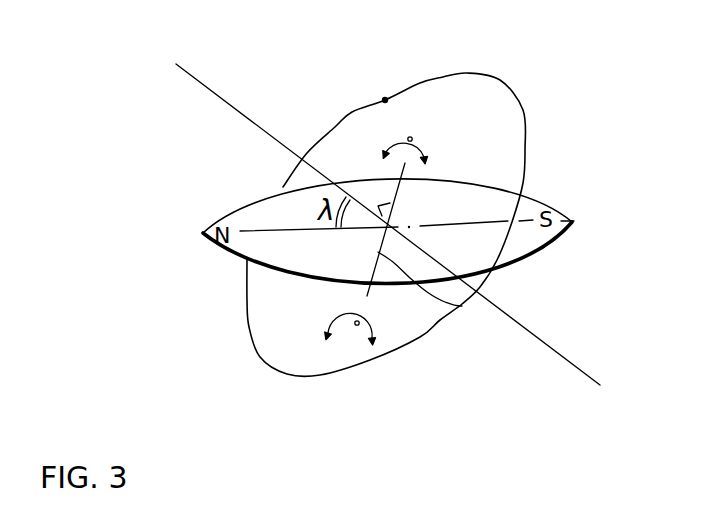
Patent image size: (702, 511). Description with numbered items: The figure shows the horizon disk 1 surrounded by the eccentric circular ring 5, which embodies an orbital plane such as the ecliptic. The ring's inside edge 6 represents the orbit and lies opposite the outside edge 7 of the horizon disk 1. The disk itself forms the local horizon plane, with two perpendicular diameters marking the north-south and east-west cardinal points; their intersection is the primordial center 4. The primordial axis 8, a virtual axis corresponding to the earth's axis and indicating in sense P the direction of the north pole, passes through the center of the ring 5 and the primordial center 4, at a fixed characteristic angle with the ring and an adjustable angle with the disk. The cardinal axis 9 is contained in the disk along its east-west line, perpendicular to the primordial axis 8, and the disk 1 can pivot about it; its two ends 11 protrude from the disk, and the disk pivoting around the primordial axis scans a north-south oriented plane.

The horizon disk 1 is at (537, 200).
The primordial center 4 is at (440, 177).
The eccentric circular ring 5 is at (425, 81).
The inside edge 6 is at (384, 100).
The outside edge 7 is at (545, 250).
The primordial axis 8 is at (212, 92).
The cardinal axis 9 is at (462, 306).
The ends of cardinal axis 11 is at (402, 173).